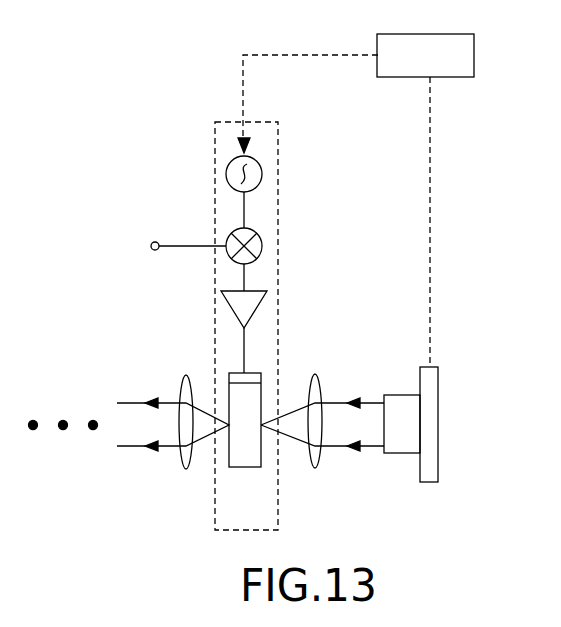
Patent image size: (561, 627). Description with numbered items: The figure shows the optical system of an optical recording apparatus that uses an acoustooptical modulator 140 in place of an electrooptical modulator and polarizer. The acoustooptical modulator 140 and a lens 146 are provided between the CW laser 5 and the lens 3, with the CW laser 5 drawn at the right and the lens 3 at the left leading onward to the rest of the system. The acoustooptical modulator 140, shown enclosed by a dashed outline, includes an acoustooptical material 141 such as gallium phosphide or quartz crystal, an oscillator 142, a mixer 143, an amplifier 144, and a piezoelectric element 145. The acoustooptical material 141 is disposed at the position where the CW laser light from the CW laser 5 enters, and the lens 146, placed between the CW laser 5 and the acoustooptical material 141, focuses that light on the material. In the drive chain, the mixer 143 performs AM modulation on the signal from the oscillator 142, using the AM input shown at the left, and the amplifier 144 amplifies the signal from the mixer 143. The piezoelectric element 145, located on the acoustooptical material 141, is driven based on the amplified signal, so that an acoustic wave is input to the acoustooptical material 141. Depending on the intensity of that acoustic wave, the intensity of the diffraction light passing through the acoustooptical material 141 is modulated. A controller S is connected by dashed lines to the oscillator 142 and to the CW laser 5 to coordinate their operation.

The controller S is at (474, 55).
The acoustooptical modulator 140 is at (215, 160).
The acoustooptical material 141 is at (286, 427).
The oscillator 142 is at (263, 173).
The mixer 143 is at (262, 246).
The amplifier 144 is at (262, 298).
The piezoelectric element 145 is at (262, 372).
The lens 146 is at (318, 468).
The lens 3 is at (194, 317).
The CW laser 5 is at (438, 425).
The amplitude modulation signal input AM is at (163, 246).